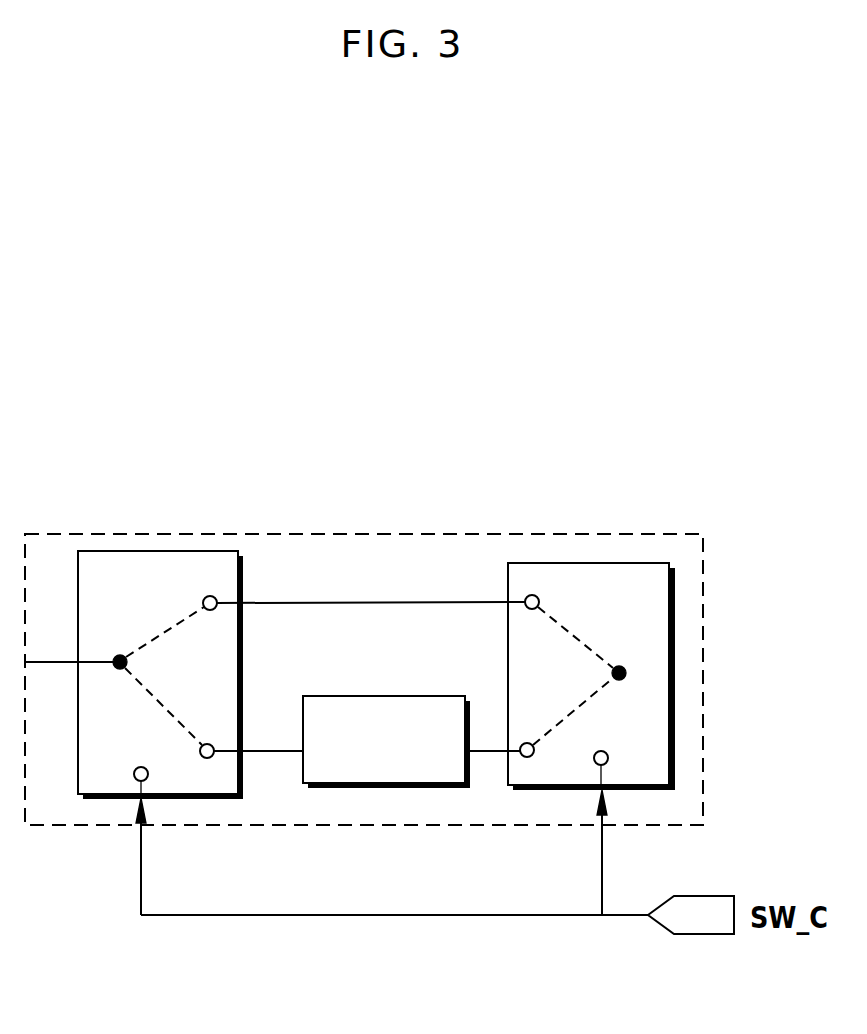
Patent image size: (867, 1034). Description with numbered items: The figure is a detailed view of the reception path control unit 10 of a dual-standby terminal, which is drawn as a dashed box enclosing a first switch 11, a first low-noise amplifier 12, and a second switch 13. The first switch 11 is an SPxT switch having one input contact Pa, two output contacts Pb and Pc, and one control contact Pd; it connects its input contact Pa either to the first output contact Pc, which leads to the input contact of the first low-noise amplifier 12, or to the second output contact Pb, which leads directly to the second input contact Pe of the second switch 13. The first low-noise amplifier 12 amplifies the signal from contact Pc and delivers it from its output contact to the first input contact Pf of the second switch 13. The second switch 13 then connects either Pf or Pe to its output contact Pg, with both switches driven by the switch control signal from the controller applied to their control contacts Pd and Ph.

The reception path control unit 10 is at (340, 534).
The first switch 11 is at (100, 551).
The first low-noise amplifier 12 is at (320, 696).
The second switch 13 is at (538, 563).